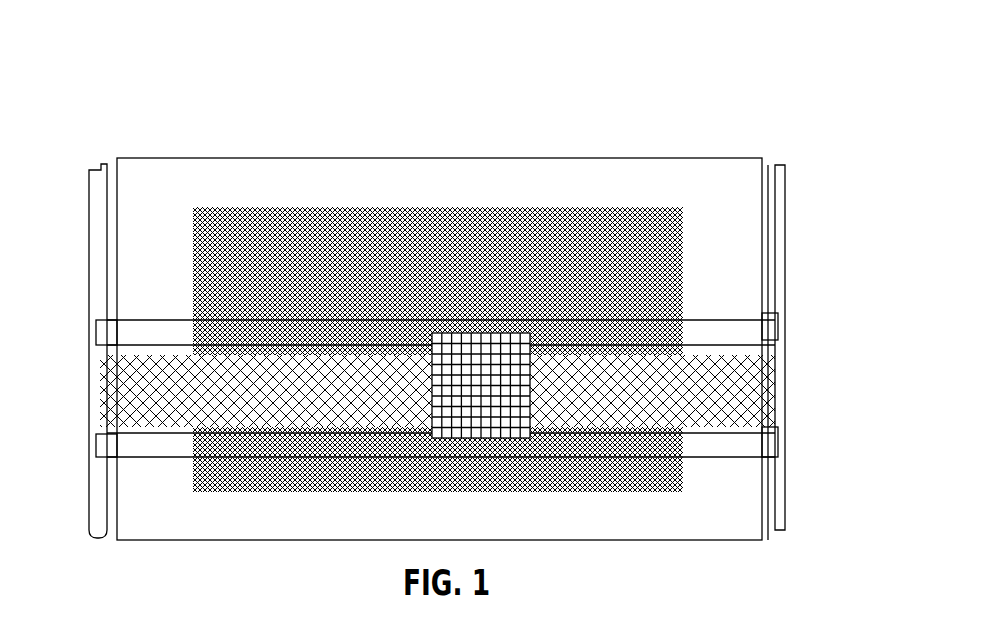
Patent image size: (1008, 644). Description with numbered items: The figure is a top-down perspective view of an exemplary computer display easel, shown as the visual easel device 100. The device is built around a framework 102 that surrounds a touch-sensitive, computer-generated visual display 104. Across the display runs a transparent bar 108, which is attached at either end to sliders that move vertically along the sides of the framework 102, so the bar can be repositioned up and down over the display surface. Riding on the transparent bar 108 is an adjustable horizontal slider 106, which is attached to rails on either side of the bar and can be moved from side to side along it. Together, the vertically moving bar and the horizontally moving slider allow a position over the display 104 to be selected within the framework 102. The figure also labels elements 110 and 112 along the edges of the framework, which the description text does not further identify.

The visual easel device 100 is at (463, 290).
The framework 102 is at (783, 168).
The touch-sensitive, computer-generated visual display 104 is at (680, 275).
The adjustable horizontal slider 106 is at (432, 384).
The transparent bar 108 is at (786, 372).
The current collector plates 110 is at (783, 335).
The end clamps 112 is at (90, 492).